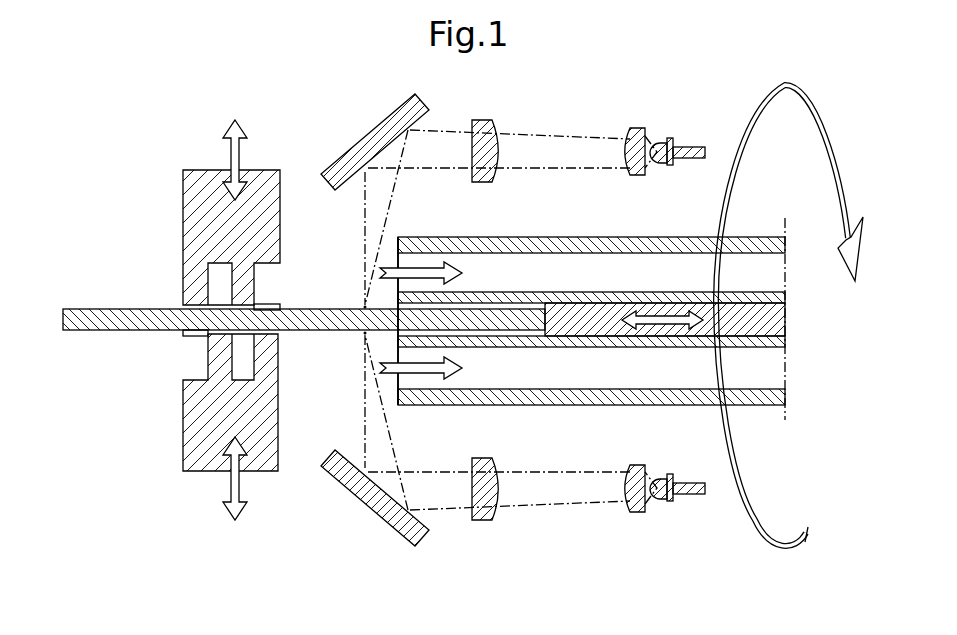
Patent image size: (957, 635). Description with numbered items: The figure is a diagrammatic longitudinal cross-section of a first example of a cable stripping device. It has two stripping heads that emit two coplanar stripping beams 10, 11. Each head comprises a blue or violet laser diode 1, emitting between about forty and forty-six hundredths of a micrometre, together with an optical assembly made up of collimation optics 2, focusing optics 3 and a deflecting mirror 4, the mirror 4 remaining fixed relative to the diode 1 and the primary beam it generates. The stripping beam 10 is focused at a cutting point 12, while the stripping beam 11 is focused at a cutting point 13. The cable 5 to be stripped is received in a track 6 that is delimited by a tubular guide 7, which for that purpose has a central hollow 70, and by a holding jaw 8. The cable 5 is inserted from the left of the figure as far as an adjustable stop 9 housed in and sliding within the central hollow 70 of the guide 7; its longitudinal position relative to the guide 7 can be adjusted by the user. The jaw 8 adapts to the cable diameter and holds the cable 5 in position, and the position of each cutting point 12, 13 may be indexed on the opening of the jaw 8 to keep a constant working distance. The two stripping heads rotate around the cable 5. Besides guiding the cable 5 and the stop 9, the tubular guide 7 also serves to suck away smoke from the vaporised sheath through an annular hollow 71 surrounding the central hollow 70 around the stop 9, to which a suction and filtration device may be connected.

The laser diode 1 is at (688, 145).
The collimation optics 2 is at (640, 128).
The focusing optics 3 is at (482, 120).
The deflecting mirror 4 is at (362, 143).
The cable 5 is at (117, 318).
The track 6 is at (511, 341).
The tubular guide 7 is at (540, 240).
The holding jaw 8 is at (207, 172).
The adjustable stop 9 is at (590, 305).
The stripping beam 10 is at (366, 215).
The stripping beam 11 is at (366, 427).
The cutting point 12 is at (359, 302).
The cutting point 13 is at (359, 339).
The central hollow 70 is at (396, 300).
The annular hollow 71 is at (650, 270).